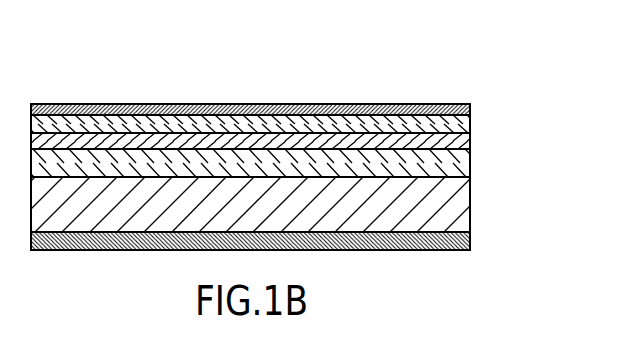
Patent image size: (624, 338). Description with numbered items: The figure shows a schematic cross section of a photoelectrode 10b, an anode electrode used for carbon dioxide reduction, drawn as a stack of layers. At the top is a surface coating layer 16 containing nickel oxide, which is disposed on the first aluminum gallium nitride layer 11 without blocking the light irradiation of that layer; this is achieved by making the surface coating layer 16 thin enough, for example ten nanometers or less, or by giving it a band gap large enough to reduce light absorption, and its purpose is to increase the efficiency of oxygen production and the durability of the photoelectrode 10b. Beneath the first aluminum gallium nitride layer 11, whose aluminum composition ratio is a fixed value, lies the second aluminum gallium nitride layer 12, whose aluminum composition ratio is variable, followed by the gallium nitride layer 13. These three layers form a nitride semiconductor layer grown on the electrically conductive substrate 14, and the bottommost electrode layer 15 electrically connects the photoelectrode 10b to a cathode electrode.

The photoelectrode 10b is at (385, 79).
The surface coating layer 16 is at (457, 108).
The first aluminum gallium nitride layer 11 is at (459, 121).
The second aluminum gallium nitride layer 12 is at (458, 139).
The gallium nitride layer 13 is at (460, 162).
The electrically conductive substrate 14 is at (458, 208).
The electrode layer 15 is at (460, 236).